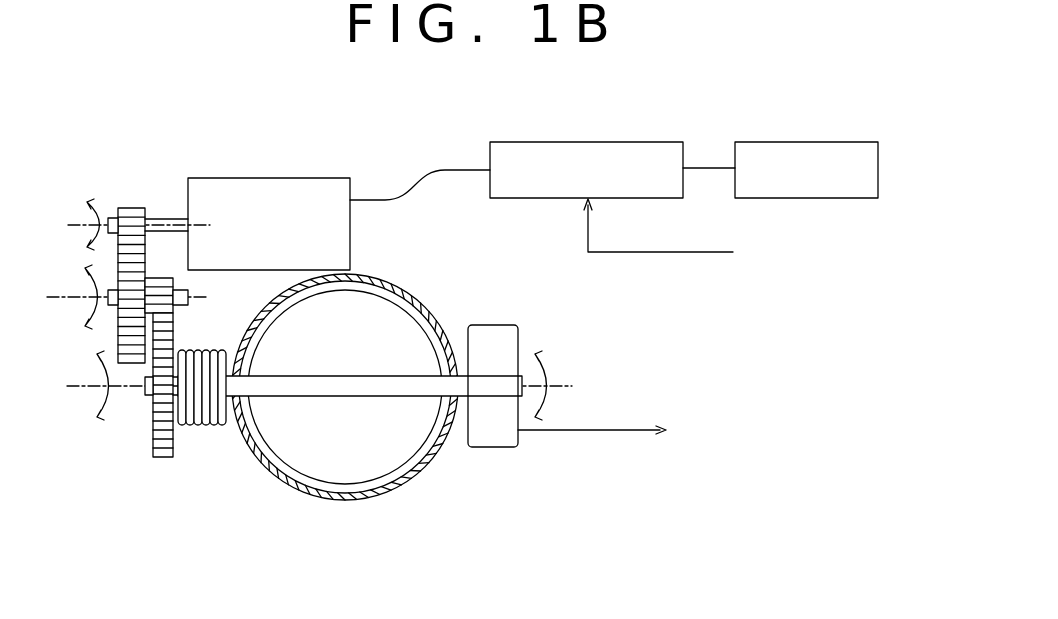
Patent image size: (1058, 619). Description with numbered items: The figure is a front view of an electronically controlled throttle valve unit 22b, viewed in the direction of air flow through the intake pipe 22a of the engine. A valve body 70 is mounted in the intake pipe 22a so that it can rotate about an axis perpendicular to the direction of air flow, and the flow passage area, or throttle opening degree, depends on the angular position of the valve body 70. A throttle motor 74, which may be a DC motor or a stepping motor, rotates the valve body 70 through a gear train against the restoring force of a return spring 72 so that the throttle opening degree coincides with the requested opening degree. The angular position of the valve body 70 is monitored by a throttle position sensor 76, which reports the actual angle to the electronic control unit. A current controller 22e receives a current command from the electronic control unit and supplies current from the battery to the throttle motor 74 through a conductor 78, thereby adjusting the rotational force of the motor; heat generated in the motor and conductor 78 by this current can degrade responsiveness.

The intake pipe 22a is at (325, 498).
The electronically controlled throttle valve unit 22b is at (111, 479).
The current controller 22e is at (527, 200).
The valve body 70 is at (388, 322).
The return spring 72 is at (200, 427).
The throttle motor 74 is at (286, 239).
The throttle position sensor 76 is at (492, 438).
The conductor 78 is at (425, 180).